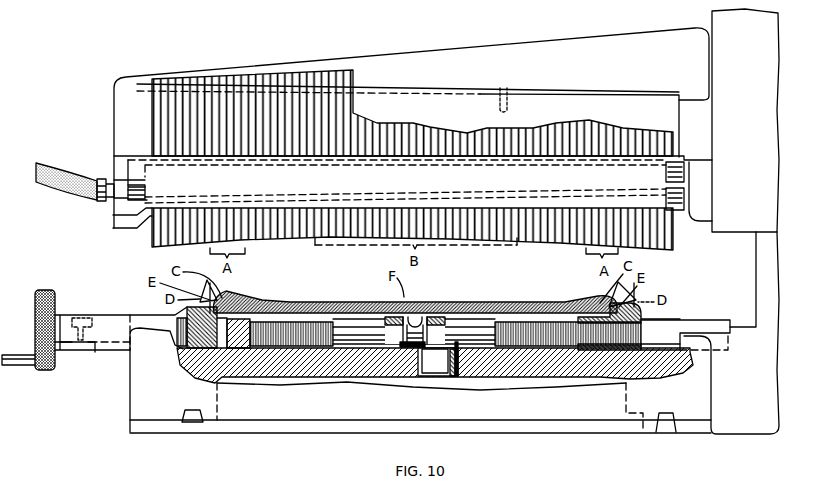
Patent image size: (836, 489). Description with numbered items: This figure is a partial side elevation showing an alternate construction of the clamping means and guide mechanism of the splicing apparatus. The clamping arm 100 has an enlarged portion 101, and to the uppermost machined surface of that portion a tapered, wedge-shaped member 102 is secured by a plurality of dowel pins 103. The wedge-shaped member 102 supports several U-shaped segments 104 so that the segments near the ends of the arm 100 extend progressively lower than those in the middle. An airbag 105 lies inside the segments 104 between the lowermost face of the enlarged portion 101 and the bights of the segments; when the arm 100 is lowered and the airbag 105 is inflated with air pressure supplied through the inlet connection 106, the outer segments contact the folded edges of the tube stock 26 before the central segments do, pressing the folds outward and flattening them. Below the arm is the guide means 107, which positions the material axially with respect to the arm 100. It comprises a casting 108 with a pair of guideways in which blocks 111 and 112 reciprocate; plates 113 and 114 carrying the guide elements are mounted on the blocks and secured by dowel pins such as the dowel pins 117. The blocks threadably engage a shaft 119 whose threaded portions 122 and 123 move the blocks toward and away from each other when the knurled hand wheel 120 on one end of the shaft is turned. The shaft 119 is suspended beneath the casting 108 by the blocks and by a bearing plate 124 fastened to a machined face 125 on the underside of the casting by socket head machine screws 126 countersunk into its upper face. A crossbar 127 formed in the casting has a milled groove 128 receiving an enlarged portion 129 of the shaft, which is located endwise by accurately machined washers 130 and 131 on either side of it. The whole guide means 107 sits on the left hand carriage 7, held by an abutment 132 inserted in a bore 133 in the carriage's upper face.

The left hand carriage 7 is at (205, 369).
The tube stock 26 is at (353, 350).
The clamping arm 100 is at (117, 122).
The enlarged portion 101 is at (644, 107).
The tapered, wedge-shaped member 102 is at (482, 86).
The dowel pins 103 is at (498, 100).
The U-shaped segments 104 is at (292, 64).
The airbag 105 is at (145, 202).
The inlet connection 106 is at (100, 180).
The guide means 107 is at (141, 316).
The casting 108 is at (691, 323).
The block 111 is at (205, 332).
The block 112 is at (641, 352).
The plate 113 is at (260, 298).
The plate 114 is at (603, 297).
The dowel pins 117 is at (228, 306).
The shaft 119 is at (368, 330).
The knurled hand wheel 120 is at (58, 297).
The threaded portion 122 is at (310, 332).
The threaded portion 123 is at (550, 330).
The bearing plate 124 is at (64, 346).
The machined face 125 is at (90, 345).
The socket head machine screws 126 is at (87, 318).
The crossbar 127 is at (432, 320).
The milled groove 128 is at (413, 318).
The enlarged portion 129 is at (410, 358).
The washer 130 is at (408, 348).
The washer 131 is at (443, 363).
The abutment 132 is at (430, 355).
The bore 133 is at (437, 347).